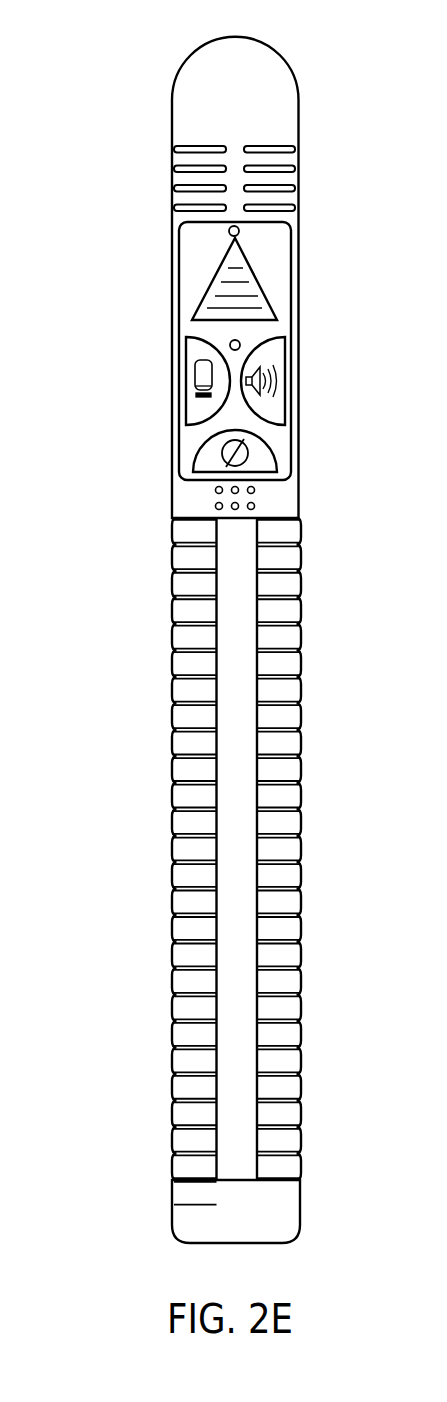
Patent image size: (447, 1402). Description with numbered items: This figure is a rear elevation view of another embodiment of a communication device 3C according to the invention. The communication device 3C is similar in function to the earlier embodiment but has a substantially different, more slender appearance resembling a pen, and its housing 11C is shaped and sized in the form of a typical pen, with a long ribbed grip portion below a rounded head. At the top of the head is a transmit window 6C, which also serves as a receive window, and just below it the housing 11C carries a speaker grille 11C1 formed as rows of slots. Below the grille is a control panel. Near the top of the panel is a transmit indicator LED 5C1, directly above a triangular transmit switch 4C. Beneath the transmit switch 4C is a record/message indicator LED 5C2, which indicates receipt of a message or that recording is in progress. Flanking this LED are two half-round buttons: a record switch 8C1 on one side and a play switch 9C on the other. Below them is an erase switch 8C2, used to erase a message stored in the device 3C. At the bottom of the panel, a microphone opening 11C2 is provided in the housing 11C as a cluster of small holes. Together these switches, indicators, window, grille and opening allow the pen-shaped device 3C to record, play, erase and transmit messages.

The communication device 3C is at (196, 632).
The transmit window 6C is at (255, 75).
The speaker grille 11C1 is at (187, 145).
The transmit indicator LED 5C1 is at (240, 231).
The transmit switch 4C is at (225, 272).
The record/message indicator LED 5C2 is at (229, 342).
The record switch 8C1 is at (199, 406).
The play switch 9C is at (268, 350).
The erase switch 8C2 is at (213, 459).
The microphone opening 11C2 is at (255, 505).
The housing 11C is at (177, 938).